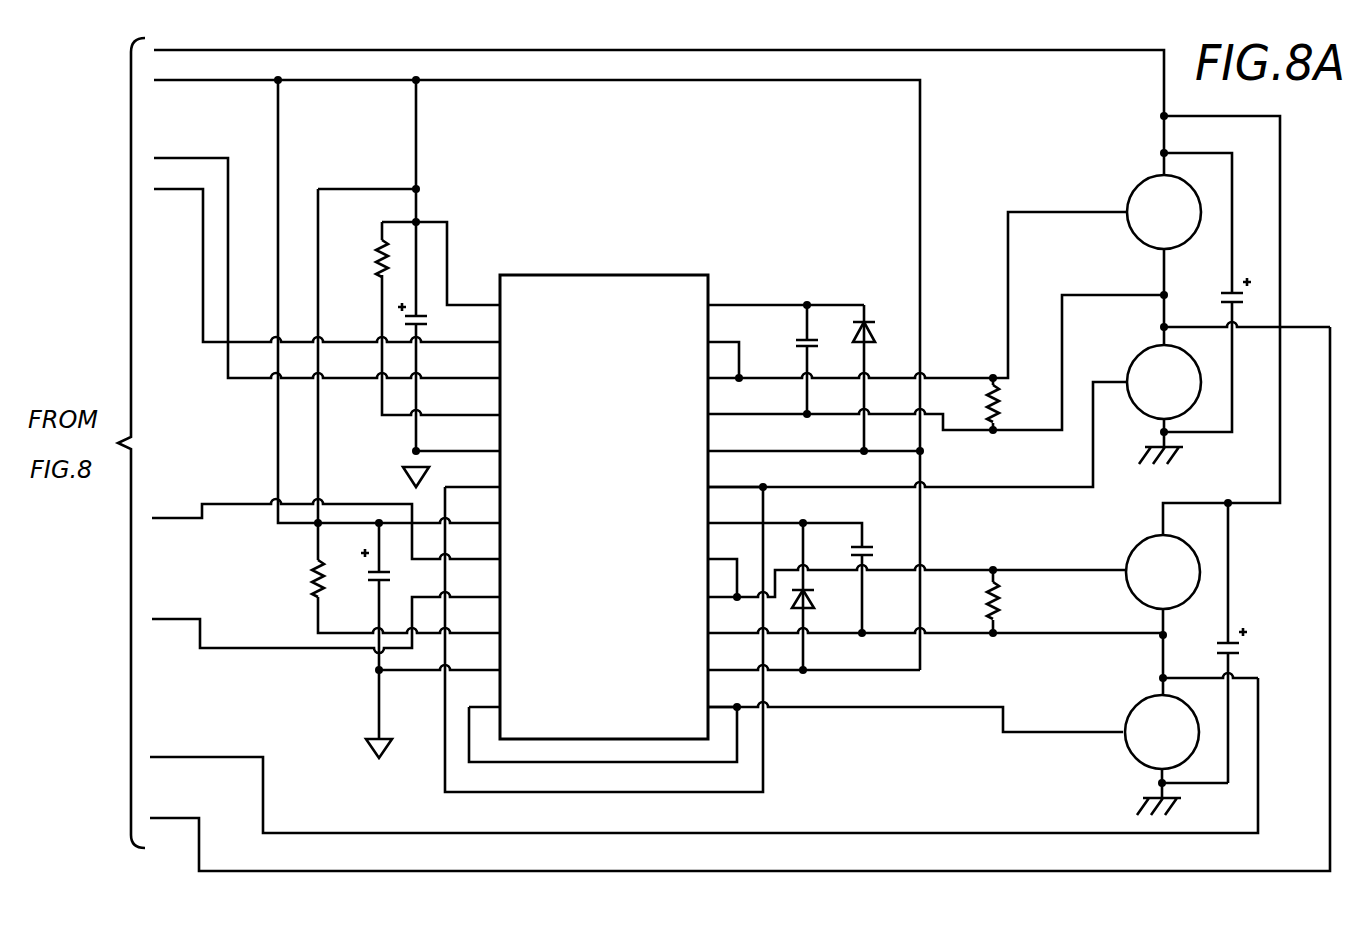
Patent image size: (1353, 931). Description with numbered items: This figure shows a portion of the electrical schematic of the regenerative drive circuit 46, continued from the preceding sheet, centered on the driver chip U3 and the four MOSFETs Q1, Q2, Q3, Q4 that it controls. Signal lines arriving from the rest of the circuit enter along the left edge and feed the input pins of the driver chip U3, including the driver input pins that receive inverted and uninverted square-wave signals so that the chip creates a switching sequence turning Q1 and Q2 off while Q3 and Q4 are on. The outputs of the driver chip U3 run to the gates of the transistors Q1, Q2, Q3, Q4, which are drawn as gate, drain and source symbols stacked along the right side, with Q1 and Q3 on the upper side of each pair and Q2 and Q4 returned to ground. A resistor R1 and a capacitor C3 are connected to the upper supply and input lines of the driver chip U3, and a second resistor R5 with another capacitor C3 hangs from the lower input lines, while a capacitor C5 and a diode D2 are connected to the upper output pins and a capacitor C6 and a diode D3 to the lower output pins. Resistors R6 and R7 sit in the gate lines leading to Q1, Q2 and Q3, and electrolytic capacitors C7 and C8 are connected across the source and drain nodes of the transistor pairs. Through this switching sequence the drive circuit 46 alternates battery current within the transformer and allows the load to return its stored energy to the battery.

The regenerative drive circuit 46 is at (1296, 192).
The driver chip U3 is at (604, 534).
The MOSFET Q1 is at (1143, 205).
The MOSFET Q2 is at (1143, 379).
The MOSFET Q3 is at (1141, 561).
The MOSFET Q4 is at (1141, 730).
The resistor R1 is at (363, 258).
The resistor R5 is at (294, 578).
The resistor R6 is at (975, 403).
The resistor R7 is at (974, 601).
The capacitor C3 is at (395, 450).
The capacitor C5 is at (788, 344).
The capacitor C6 is at (843, 552).
The capacitor C7 is at (1217, 295).
The capacitor C8 is at (1213, 647).
The diode D2 is at (883, 334).
The diode D3 is at (823, 602).